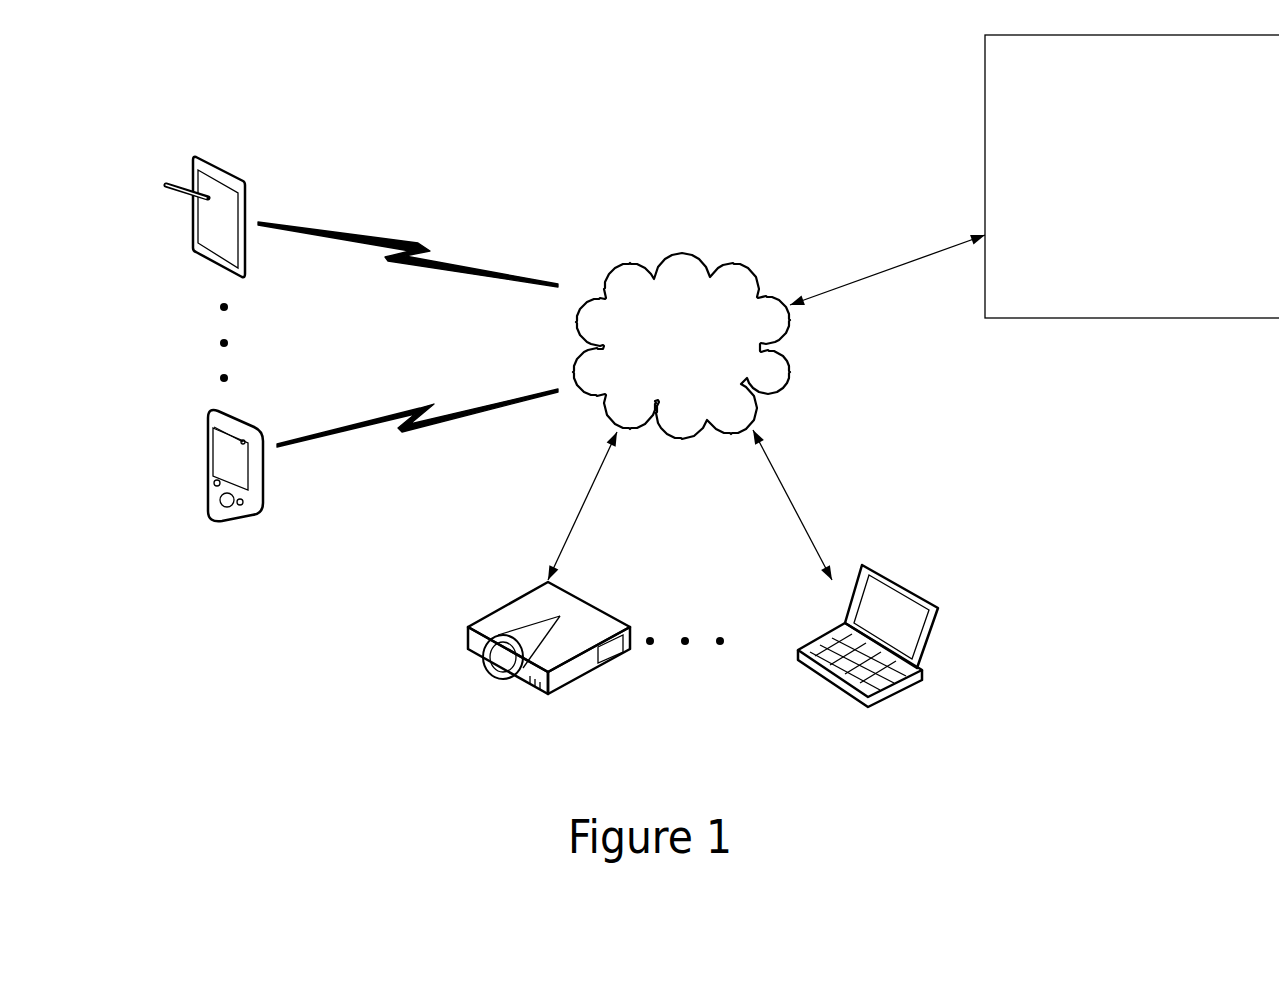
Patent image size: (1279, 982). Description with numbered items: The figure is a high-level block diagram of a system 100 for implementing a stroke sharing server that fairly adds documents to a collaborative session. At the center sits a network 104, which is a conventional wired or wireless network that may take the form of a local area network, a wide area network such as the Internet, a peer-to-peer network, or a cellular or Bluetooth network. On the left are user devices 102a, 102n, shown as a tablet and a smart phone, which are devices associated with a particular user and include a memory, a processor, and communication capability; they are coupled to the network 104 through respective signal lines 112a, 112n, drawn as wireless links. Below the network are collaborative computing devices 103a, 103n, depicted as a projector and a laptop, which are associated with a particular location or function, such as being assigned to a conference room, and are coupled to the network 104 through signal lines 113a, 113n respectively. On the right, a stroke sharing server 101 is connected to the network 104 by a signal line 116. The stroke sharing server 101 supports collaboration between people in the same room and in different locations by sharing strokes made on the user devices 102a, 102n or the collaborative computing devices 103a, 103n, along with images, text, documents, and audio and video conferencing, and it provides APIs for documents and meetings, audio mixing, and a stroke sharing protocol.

The system 100 is at (200, 90).
The stroke sharing server 101 is at (1168, 207).
The user device 102a is at (242, 176).
The user device 102n is at (243, 416).
The collaborative computing device 103a is at (540, 698).
The collaborative computing device 103n is at (845, 698).
The network 104 is at (704, 376).
The signal line 112a is at (417, 248).
The signal line 112n is at (408, 410).
The signal line 113a is at (598, 459).
The signal line 113n is at (765, 453).
The signal line 116 is at (880, 271).